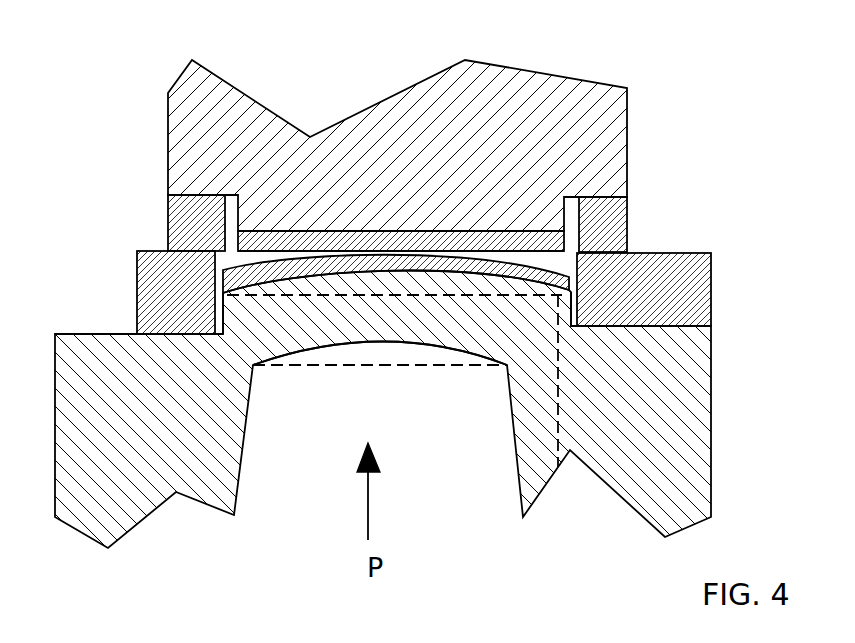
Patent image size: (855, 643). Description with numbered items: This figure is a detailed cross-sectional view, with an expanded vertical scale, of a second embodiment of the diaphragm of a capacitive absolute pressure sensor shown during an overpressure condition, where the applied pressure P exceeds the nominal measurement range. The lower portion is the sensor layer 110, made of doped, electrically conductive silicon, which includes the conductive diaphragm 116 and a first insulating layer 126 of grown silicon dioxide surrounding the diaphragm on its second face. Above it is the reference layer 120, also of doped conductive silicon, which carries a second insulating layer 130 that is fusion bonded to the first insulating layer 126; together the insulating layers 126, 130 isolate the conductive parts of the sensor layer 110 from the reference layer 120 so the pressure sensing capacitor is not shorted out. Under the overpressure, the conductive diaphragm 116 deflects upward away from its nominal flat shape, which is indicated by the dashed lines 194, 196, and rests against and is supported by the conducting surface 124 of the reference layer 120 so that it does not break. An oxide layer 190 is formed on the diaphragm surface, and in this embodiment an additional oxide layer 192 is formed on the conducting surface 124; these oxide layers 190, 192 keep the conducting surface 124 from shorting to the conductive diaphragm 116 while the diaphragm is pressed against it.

The sensor layer 110 is at (653, 430).
The conductive diaphragm 116 is at (397, 320).
The reference layer 120 is at (587, 142).
The conducting surface 124 is at (392, 232).
The first insulating layer 126 is at (153, 288).
The second insulating layer 130 is at (202, 213).
The oxide layer 190 is at (268, 272).
The additional oxide layer 192 is at (320, 245).
The dashed line 194 is at (330, 367).
The dashed line 196 is at (462, 295).